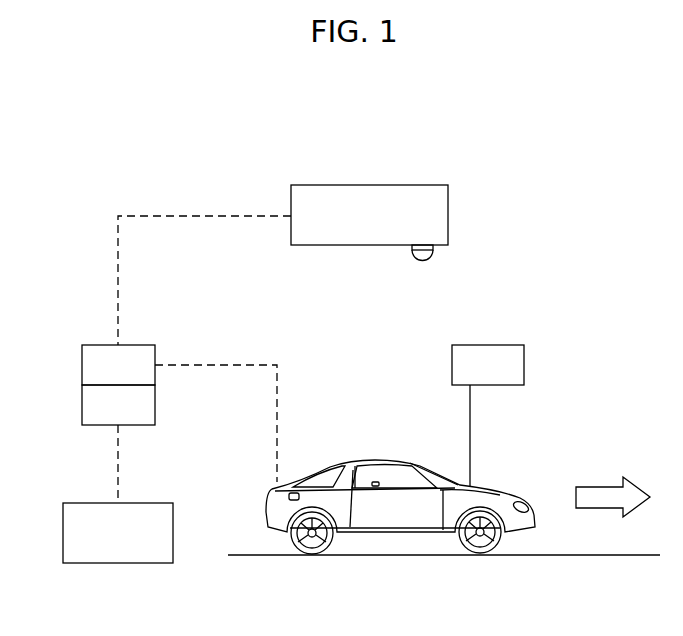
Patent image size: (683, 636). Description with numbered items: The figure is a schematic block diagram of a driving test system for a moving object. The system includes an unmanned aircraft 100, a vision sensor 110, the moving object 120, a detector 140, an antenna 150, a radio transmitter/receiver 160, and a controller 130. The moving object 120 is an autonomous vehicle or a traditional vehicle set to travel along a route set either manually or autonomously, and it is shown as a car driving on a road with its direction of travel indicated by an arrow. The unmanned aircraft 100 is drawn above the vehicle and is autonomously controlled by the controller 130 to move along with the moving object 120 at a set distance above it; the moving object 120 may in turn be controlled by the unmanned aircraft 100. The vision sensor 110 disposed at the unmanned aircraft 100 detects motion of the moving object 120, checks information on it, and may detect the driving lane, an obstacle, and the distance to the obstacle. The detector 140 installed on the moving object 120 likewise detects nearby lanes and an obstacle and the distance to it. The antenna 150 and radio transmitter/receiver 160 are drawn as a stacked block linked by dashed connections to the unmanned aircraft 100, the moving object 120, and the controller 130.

The unmanned aircraft 100 is at (328, 185).
The vision sensor 110 is at (450, 256).
The moving object 120 is at (340, 462).
The controller 130 is at (148, 565).
The detector 140 is at (524, 358).
The antenna 150 is at (82, 358).
The radio transmitter/receiver 160 is at (82, 410).